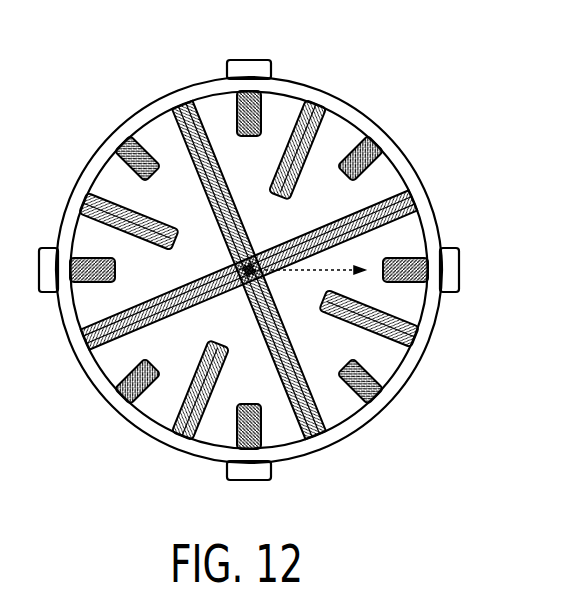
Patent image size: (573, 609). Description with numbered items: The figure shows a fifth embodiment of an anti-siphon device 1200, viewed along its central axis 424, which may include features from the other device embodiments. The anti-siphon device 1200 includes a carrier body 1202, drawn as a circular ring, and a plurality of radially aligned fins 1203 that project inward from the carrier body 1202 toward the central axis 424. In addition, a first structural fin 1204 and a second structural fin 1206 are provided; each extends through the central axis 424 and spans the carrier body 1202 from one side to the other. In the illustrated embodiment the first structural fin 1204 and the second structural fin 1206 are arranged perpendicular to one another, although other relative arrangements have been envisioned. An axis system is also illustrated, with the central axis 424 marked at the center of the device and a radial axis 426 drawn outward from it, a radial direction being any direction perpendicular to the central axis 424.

The anti-siphon device 1200 is at (472, 62).
The carrier body 1202 is at (410, 160).
The radially aligned fins 1203 is at (364, 151).
The first structural fin 1204 is at (305, 246).
The second structural fin 1206 is at (221, 188).
The central axis 424 is at (248, 268).
The radial axis 426 is at (291, 272).